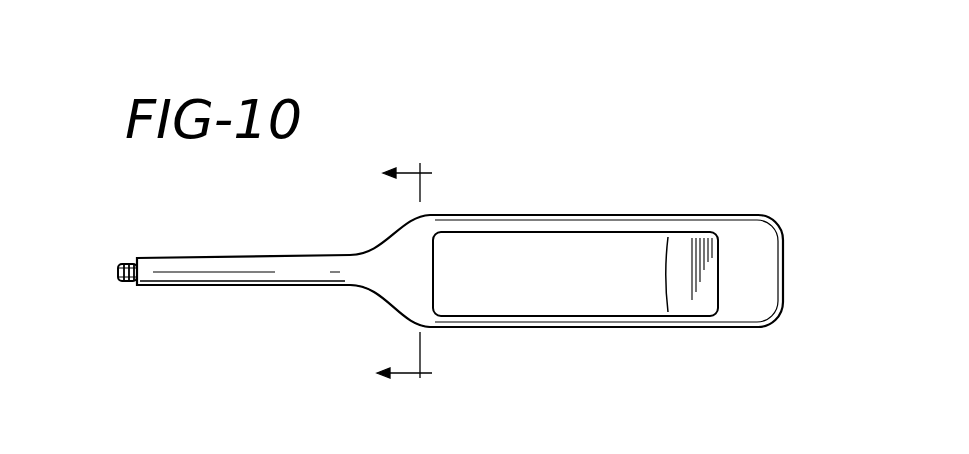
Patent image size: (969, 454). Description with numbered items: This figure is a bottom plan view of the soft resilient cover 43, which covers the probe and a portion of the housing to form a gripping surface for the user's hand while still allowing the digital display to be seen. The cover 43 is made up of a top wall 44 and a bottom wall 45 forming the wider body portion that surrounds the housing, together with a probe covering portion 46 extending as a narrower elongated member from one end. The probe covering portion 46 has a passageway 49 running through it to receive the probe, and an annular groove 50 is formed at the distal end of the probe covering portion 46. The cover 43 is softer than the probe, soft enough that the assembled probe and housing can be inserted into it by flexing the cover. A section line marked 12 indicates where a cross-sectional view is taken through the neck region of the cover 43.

The housing 43 is at (618, 197).
The display window 44 is at (700, 240).
The tapered neck portion 45 is at (418, 300).
The probe shaft 46 is at (246, 256).
The probe tip 49 is at (116, 272).
The tip collar 50 is at (130, 263).
The section line 12- 12 is at (422, 274).